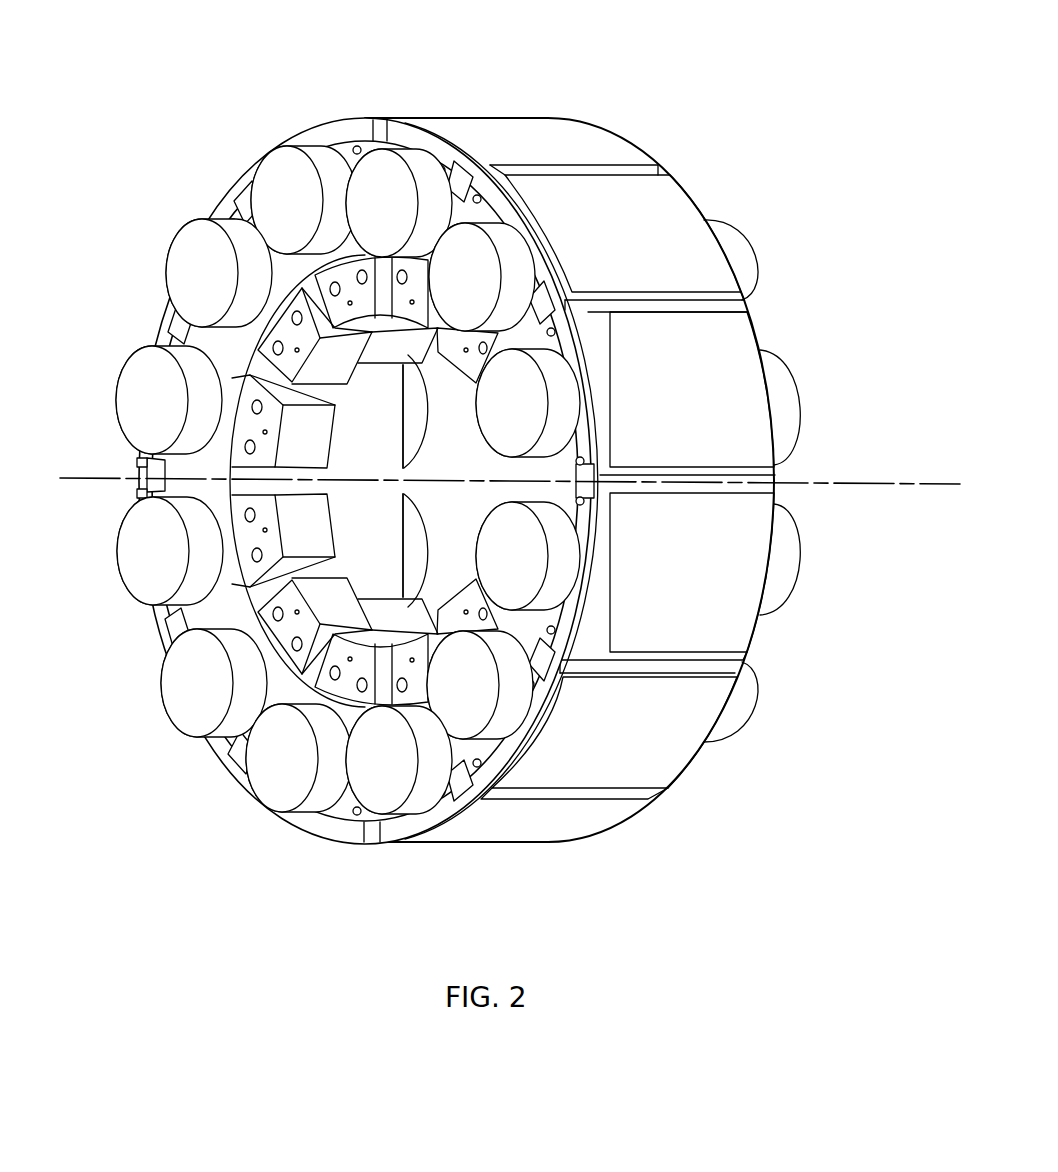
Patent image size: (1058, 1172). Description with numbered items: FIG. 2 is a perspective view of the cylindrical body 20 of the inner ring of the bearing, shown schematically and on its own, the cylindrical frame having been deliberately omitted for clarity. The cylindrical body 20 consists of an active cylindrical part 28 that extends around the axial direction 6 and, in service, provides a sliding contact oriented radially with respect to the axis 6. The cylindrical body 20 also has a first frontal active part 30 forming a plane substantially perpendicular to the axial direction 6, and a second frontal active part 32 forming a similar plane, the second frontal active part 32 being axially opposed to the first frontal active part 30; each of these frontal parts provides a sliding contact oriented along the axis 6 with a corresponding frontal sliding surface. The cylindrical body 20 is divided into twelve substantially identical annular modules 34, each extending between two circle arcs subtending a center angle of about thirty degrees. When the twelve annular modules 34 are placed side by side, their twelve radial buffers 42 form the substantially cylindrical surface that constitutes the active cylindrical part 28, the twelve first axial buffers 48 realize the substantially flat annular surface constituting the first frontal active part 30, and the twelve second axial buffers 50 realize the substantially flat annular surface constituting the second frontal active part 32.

The axial direction 6 is at (933, 482).
The cylindrical body 20 is at (786, 224).
The active cylindrical part 28 is at (366, 100).
The first frontal active part 30 is at (150, 553).
The second frontal active part 32 is at (824, 572).
The annular modules 34 is at (401, 610).
The radial buffers 42 is at (740, 240).
The first axial buffers 48 is at (148, 400).
The second axial buffers 50 is at (750, 257).